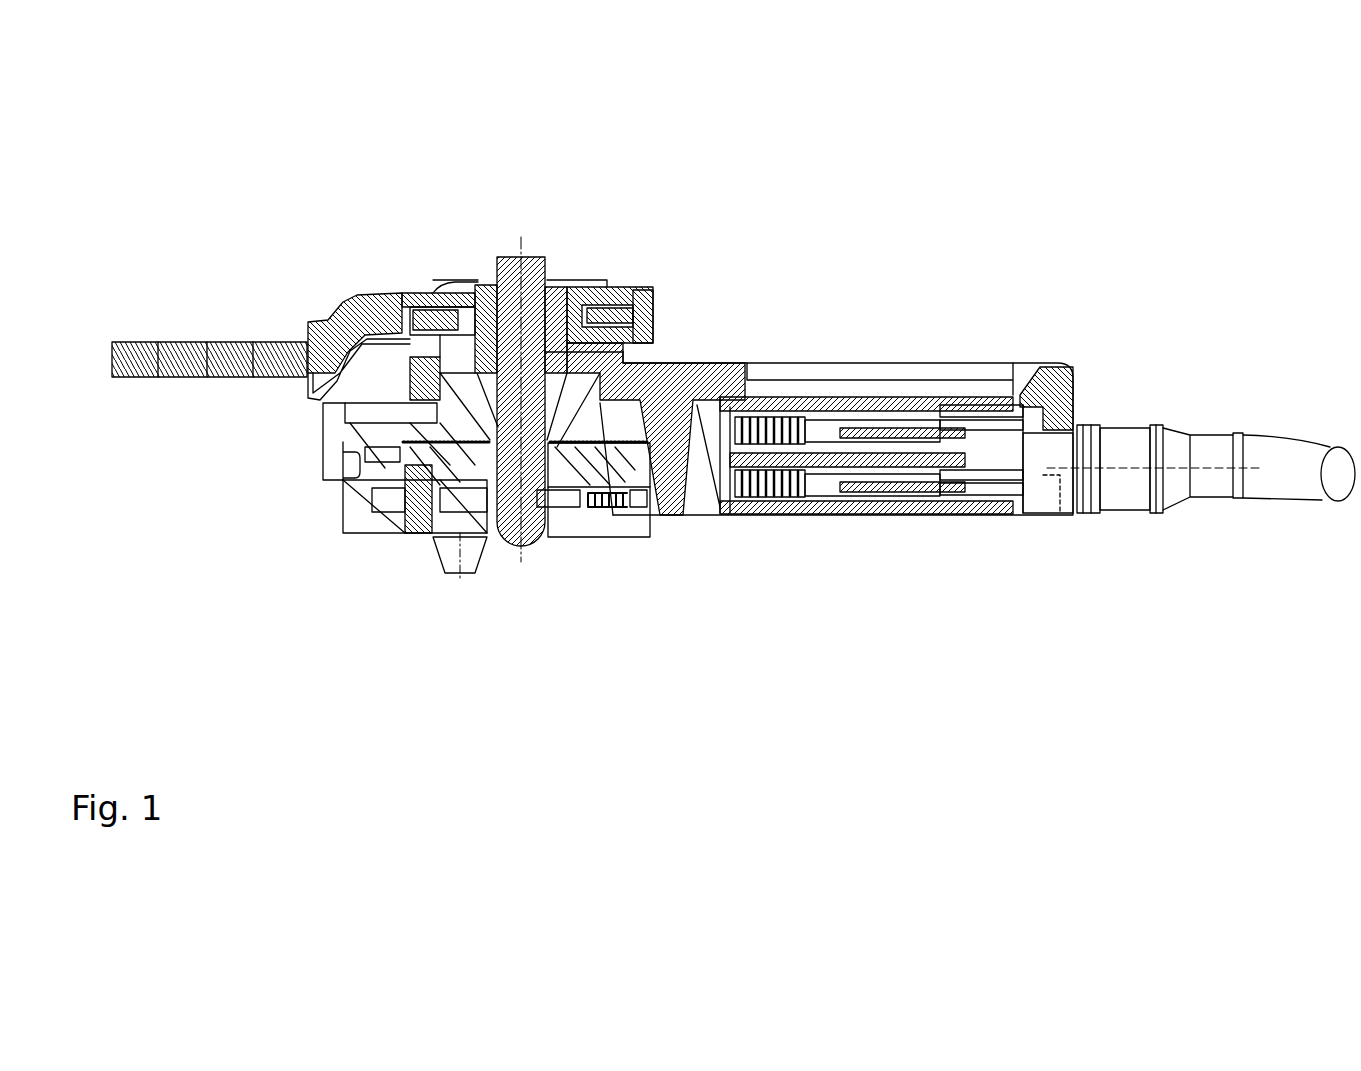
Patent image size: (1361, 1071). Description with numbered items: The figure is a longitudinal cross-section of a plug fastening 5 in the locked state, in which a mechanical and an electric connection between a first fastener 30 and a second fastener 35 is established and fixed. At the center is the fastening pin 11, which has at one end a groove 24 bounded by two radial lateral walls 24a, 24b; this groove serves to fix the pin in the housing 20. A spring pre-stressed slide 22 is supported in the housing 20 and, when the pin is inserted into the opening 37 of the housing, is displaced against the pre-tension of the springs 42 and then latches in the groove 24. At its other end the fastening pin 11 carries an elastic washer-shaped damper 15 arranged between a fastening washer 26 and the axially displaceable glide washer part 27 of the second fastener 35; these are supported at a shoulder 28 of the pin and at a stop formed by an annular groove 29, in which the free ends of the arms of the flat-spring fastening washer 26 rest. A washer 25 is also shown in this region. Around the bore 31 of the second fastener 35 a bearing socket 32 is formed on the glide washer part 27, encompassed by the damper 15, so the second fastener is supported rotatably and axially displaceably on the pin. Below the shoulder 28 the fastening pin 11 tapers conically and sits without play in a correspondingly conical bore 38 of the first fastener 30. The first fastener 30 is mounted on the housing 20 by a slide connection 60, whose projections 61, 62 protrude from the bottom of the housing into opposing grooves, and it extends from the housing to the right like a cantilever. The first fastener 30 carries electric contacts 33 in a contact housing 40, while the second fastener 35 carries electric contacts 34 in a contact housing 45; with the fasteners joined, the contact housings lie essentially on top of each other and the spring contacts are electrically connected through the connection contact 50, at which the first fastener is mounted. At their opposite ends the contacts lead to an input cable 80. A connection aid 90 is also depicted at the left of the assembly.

The plug fastening 5 is at (695, 128).
The fastening pin 11 is at (482, 545).
The damper 15 is at (608, 290).
The housing 20 is at (360, 517).
The slide 22 is at (557, 530).
The groove 24 is at (505, 535).
The lateral groove wall 24a is at (633, 297).
The lateral groove wall 24b is at (548, 520).
The washer 25 is at (433, 288).
The fastening washer 26 is at (548, 283).
The glide washer part 27 is at (392, 298).
The shoulder 28 is at (445, 540).
The annular groove 29 is at (501, 262).
The first fastener 30 is at (697, 468).
The bore 31 is at (412, 377).
The bearing socket 32 is at (563, 286).
The electric contact 33 is at (757, 516).
The electric contact 34 is at (768, 397).
The second fastener 35 is at (702, 395).
The opening 37 is at (560, 520).
The conical bore 38 is at (580, 520).
The contact housing 40 is at (863, 514).
The spring 42 is at (651, 372).
The contact housing 45 is at (861, 395).
The connection contact 50 is at (723, 510).
The slide connection 60 is at (350, 462).
The projection 61 is at (335, 449).
The projection 62 is at (671, 378).
The input cable 80 is at (1265, 470).
The connection aid 90 is at (168, 340).